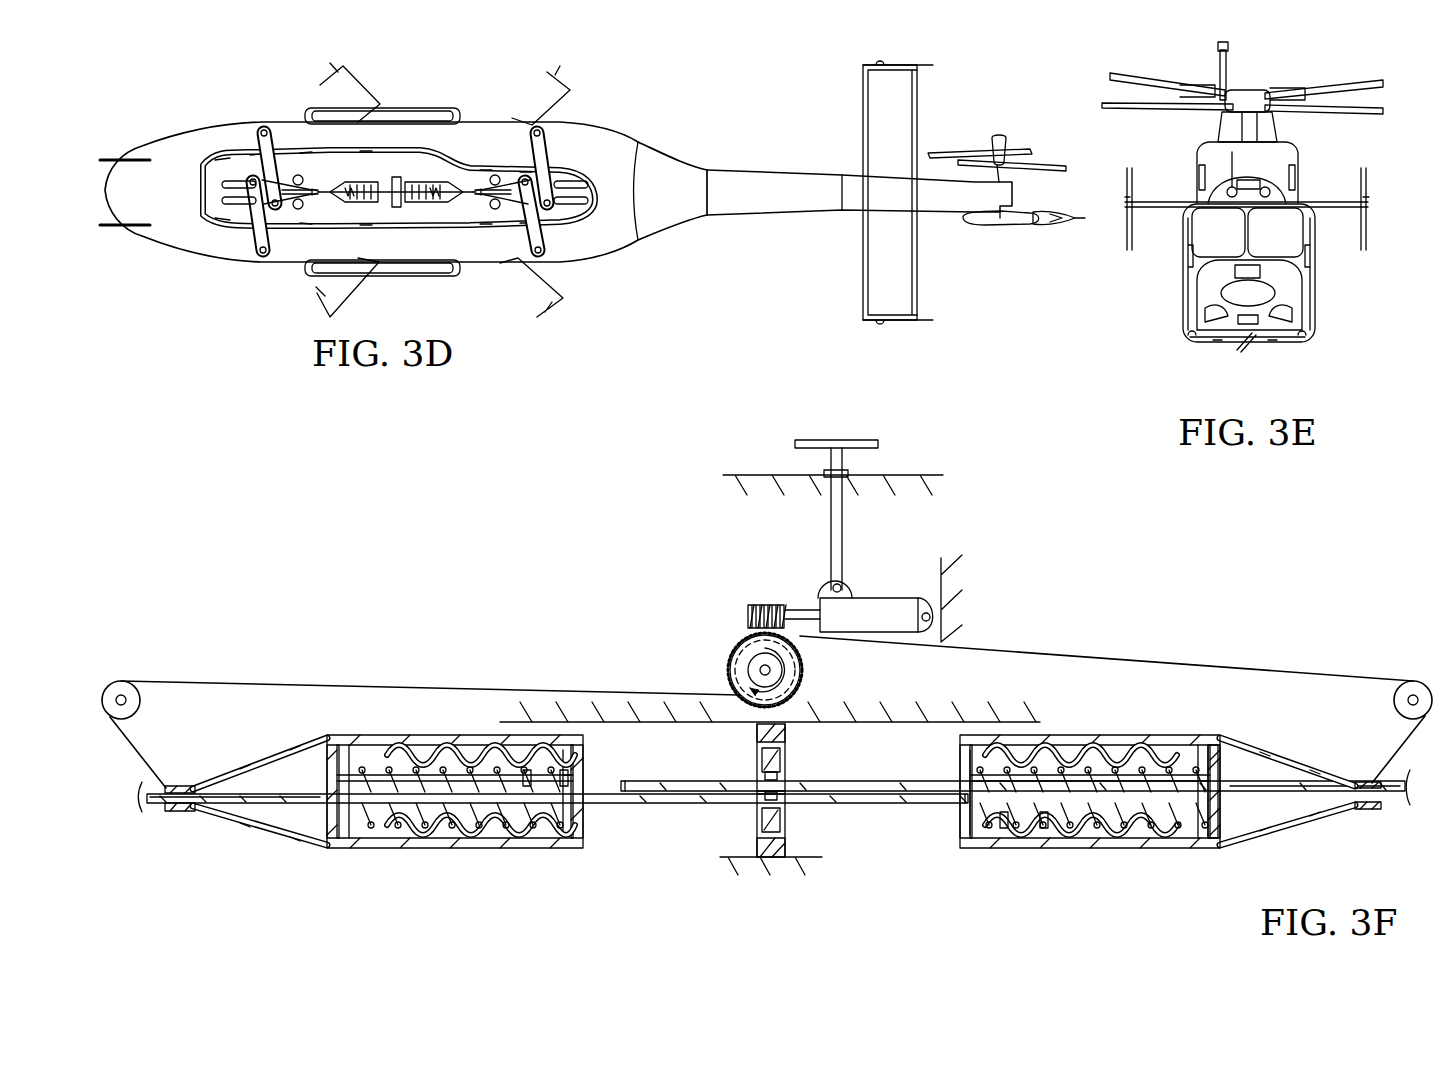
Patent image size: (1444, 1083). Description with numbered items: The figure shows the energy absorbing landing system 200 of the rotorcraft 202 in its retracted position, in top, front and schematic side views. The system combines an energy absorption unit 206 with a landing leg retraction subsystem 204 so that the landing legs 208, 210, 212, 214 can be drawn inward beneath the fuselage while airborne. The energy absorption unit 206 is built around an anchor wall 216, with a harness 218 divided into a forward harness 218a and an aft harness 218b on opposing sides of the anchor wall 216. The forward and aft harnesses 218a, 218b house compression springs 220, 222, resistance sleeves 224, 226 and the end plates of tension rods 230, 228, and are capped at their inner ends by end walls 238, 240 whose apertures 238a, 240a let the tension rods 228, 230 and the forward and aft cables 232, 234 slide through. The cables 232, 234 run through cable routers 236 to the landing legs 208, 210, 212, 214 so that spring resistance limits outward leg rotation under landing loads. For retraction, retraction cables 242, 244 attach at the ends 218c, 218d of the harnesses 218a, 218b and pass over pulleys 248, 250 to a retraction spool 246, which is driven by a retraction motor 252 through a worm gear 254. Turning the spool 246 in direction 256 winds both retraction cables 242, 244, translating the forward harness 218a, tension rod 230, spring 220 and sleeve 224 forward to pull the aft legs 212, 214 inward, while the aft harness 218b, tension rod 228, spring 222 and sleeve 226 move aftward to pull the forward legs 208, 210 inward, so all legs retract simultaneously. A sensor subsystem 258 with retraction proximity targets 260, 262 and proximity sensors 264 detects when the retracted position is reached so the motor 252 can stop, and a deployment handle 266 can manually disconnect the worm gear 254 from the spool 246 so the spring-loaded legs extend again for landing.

In FIG. 3D, the energy absorbing landing system 200 is at (463, 150).
In FIG. 3D, the rotorcraft 202 is at (148, 88).
In FIG. 3E, the rotorcraft 202 is at (1306, 76).
In FIG. 3F, the landing leg retraction subsystem 204 is at (687, 566).
In FIG. 3D, the energy absorption unit 206 is at (387, 175).
In FIG. 3F, the energy absorption unit 206 is at (410, 865).
In FIG. 3D, the landing leg 208 is at (262, 145).
In FIG. 3E, the landing leg 208 is at (1272, 342).
In FIG. 3D, the landing leg 210 is at (260, 232).
In FIG. 3E, the landing leg 210 is at (1215, 342).
In FIG. 3D, the landing leg 212 is at (541, 145).
In FIG. 3D, the landing leg 214 is at (535, 232).
In FIG. 3F, the anchor wall 216 is at (772, 858).
In FIG. 3F, the harness 218 is at (266, 830).
In FIG. 3F, the forward harness 218a is at (535, 848).
In FIG. 3F, the aft harness 218b is at (1016, 848).
In FIG. 3F, the end 218c is at (180, 812).
In FIG. 3F, the end 218d is at (1370, 810).
In FIG. 3F, the compression spring 220 is at (357, 835).
In FIG. 3F, the compression spring 222 is at (1178, 830).
In FIG. 3F, the resistance sleeve 224 is at (470, 845).
In FIG. 3F, the resistance sleeve 226 is at (1080, 845).
In FIG. 3F, the tension rod 228 is at (665, 804).
In FIG. 3F, the tension rod 230 is at (838, 782).
In FIG. 3D, the forward cable 232 is at (312, 200).
In FIG. 3F, the forward cable 232 is at (236, 794).
In FIG. 3D, the aft cable 234 is at (472, 200).
In FIG. 3F, the aft cable 234 is at (1300, 784).
In FIG. 3D, the cable router 236 is at (220, 195).
In FIG. 3F, the end wall 238 is at (586, 845).
In FIG. 3F, the aperture 238a is at (588, 777).
In FIG. 3F, the end wall 240 is at (965, 850).
In FIG. 3F, the aperture 240a is at (962, 822).
In FIG. 3F, the retraction cable 242 is at (346, 688).
In FIG. 3F, the retraction cable 244 is at (1190, 660).
In FIG. 3F, the retraction spool 246 is at (802, 664).
In FIG. 3F, the pulley 248 is at (116, 690).
In FIG. 3F, the pulley 250 is at (1414, 690).
In FIG. 3F, the retraction motor 252 is at (885, 598).
In FIG. 3F, the worm gear 254 is at (768, 600).
In FIG. 3F, the direction 256 is at (750, 668).
In FIG. 3F, the sensor subsystem 258 is at (745, 856).
In FIG. 3F, the retraction proximity target 260 is at (762, 792).
In FIG. 3F, the retraction proximity target 262 is at (768, 782).
In FIG. 3F, the proximity sensor 264 is at (778, 820).
In FIG. 3F, the deployment handle 266 is at (794, 444).